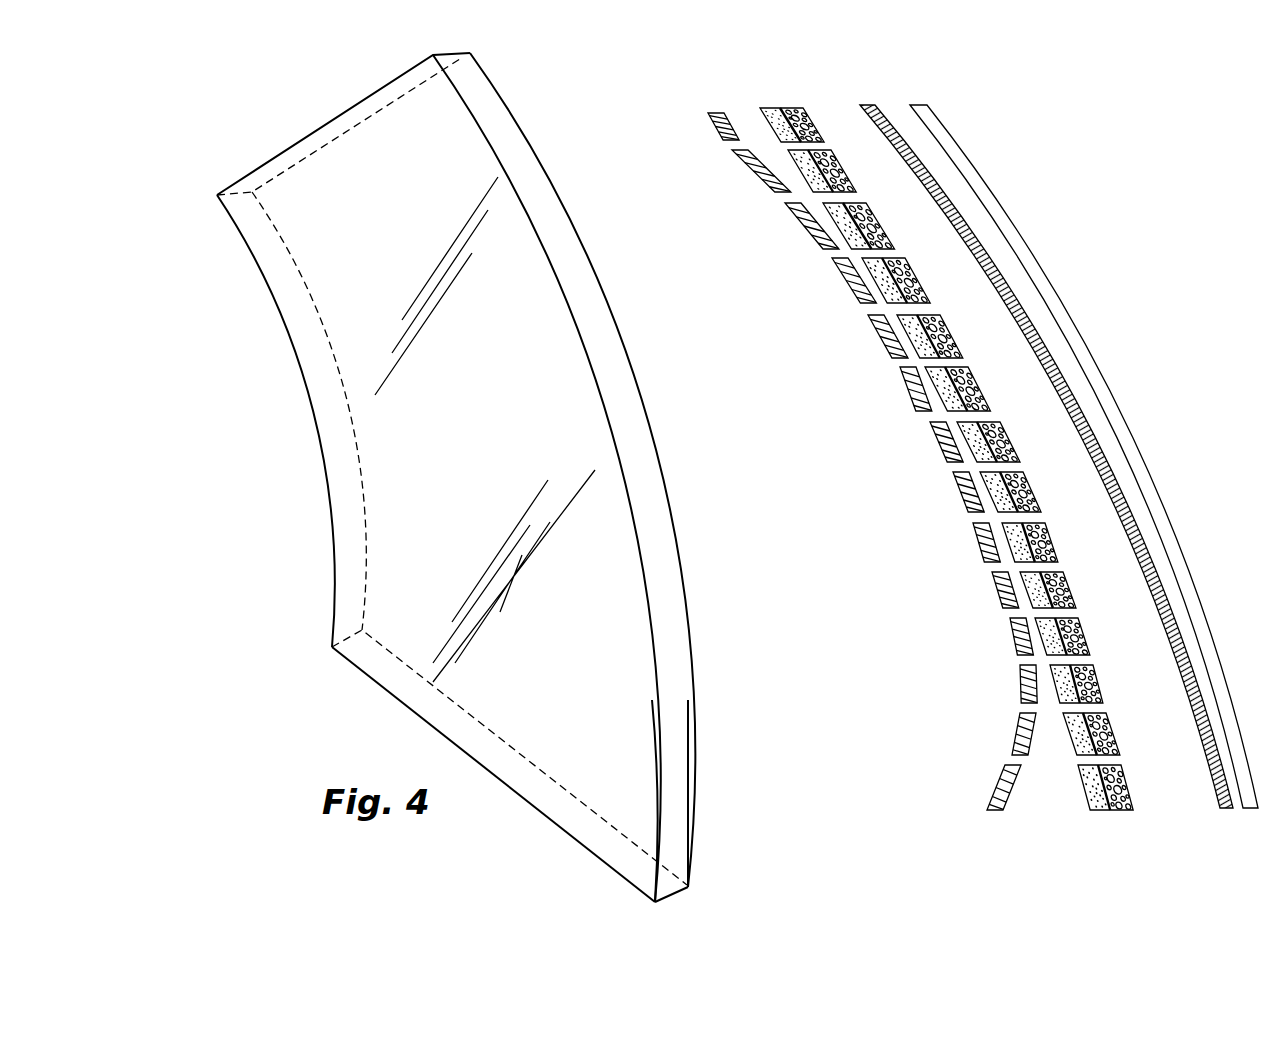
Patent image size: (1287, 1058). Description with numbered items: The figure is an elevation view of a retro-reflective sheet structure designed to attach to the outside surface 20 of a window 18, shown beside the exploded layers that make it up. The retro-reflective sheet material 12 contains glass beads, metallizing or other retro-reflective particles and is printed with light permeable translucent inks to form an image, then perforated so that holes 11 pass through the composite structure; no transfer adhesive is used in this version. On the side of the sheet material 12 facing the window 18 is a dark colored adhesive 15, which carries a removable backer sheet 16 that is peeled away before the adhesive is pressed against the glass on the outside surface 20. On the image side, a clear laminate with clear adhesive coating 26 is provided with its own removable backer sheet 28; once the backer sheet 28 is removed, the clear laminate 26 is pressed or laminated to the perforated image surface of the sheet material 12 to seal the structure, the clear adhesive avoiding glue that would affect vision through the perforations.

The outside surface 20 is at (578, 120).
The window 18 is at (678, 900).
The retro-reflective sheet material 12 is at (790, 105).
The dark colored adhesive 15 is at (1090, 812).
The removable backer sheet 16 is at (1000, 597).
The hole 11 is at (927, 417).
The clear laminate with clear adhesive coating 26 is at (1108, 372).
The removable backer sheet 28 is at (1220, 812).